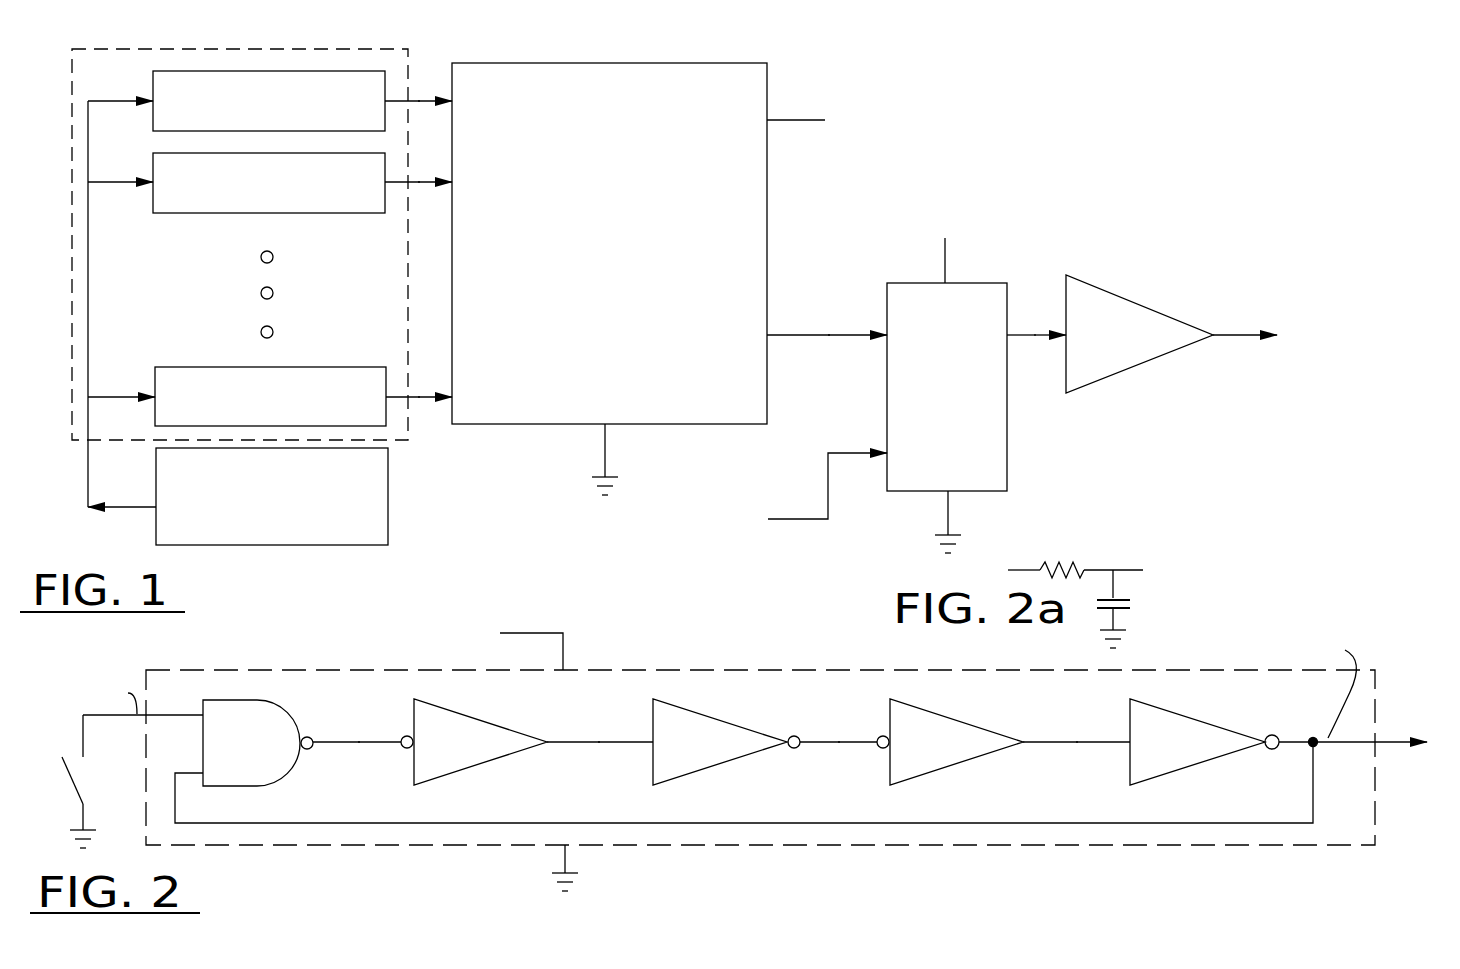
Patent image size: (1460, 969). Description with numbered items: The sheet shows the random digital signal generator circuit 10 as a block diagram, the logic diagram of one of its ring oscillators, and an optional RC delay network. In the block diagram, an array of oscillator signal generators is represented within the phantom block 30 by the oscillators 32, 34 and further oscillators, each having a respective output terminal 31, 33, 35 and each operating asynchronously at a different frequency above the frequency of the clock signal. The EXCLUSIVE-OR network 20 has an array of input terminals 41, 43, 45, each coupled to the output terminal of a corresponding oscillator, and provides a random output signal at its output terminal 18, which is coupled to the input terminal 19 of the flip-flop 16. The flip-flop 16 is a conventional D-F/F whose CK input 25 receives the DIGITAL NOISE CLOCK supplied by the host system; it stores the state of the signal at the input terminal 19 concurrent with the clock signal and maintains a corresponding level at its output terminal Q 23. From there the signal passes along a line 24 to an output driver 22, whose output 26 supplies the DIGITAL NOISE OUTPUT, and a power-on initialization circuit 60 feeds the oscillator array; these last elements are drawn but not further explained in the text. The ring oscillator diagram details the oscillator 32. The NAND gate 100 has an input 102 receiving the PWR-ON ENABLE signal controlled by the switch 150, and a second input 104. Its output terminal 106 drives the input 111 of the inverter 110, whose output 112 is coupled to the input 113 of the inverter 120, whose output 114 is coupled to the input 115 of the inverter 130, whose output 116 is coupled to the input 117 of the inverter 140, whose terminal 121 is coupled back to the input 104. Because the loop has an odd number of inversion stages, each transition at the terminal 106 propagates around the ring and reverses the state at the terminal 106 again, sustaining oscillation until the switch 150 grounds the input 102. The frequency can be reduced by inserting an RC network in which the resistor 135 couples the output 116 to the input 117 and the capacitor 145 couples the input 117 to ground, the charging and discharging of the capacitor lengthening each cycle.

In FIG. 1, the random digital signal generator circuit 10 is at (1165, 163).
In FIG. 1, the phantom block 30 is at (355, 301).
In FIG. 1, the oscillator 32 is at (153, 88).
In FIG. 2, the oscillator 32 is at (610, 798).
In FIG. 1, the oscillator 34 is at (155, 170).
In FIG. 1, the input terminal 41 is at (452, 95).
In FIG. 1, the output terminal 31 is at (418, 103).
In FIG. 2, the output terminal 31 is at (1316, 750).
In FIG. 1, the input terminal 43 is at (452, 176).
In FIG. 1, the output terminal 33 is at (418, 184).
In FIG. 1, the input terminal 45 is at (452, 388).
In FIG. 1, the output terminal 35 is at (410, 400).
In FIG. 1, the power-on initialization circuit 60 is at (88, 514).
In FIG. 1, the EXCLUSIVE-OR network 20 is at (616, 307).
In FIG. 1, the output terminal 18 is at (768, 335).
In FIG. 1, the input terminal 19 is at (880, 346).
In FIG. 1, the flip-flop 16 is at (965, 423).
In FIG. 1, the CK input 25 is at (882, 445).
In FIG. 1, the output terminal Q 23 is at (1008, 333).
In FIG. 1, the output driver input 24 is at (1060, 346).
In FIG. 1, the output driver 22 is at (1125, 348).
In FIG. 1, the digital noise output 26 is at (1246, 346).
In FIG. 2, the switch 150 is at (74, 779).
In FIG. 2, the input 102 is at (201, 712).
In FIG. 2, the NAND gate 100 is at (258, 743).
In FIG. 2, the input 104 is at (187, 776).
In FIG. 2, the output terminal 106 is at (313, 735).
In FIG. 2, the input 111 is at (397, 753).
In FIG. 2, the inverter 110 is at (480, 742).
In FIG. 2, the output 112 is at (548, 738).
In FIG. 2, the input 113 is at (645, 748).
In FIG. 2, the inverter 120 is at (726, 742).
In FIG. 2, the output 114 is at (800, 735).
In FIG. 2, the input 115 is at (884, 751).
In FIG. 2, the inverter 130 is at (956, 742).
In FIG. 2, the output 116 is at (1022, 740).
In FIG. 2A, the output 116 is at (1018, 545).
In FIG. 2, the input 117 is at (1128, 748).
In FIG. 2A, the input 117 is at (1138, 576).
In FIG. 2, the inverter 140 is at (1197, 742).
In FIG. 2, the terminal 121 is at (1283, 736).
In FIG. 2A, the resistor 135 is at (1043, 568).
In FIG. 2A, the capacitor 145 is at (1118, 600).